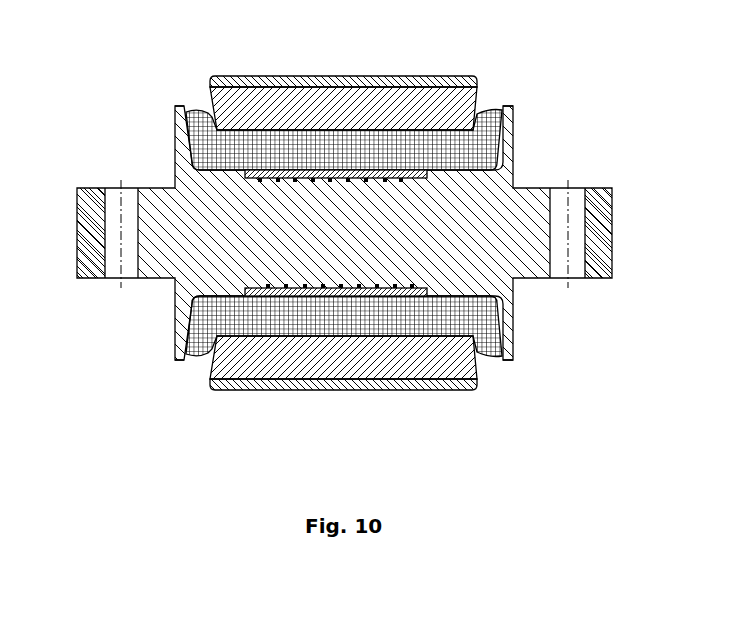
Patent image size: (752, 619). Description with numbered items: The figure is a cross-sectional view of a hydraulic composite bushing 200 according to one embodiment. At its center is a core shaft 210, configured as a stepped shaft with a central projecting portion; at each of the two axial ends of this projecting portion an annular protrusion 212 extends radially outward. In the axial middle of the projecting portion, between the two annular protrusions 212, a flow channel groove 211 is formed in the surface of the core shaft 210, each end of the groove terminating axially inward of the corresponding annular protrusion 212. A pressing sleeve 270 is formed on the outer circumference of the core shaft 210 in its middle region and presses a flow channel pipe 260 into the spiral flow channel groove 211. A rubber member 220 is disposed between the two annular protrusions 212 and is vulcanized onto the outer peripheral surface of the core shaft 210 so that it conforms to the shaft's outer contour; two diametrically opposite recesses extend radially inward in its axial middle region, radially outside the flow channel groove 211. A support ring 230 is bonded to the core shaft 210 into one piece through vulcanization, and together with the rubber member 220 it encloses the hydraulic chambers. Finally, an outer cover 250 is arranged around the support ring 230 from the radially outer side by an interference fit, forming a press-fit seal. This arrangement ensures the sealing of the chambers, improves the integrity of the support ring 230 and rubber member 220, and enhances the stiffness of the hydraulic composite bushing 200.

The hydraulic composite bushing 200 is at (101, 34).
The core shaft 210 is at (513, 303).
The flow channel groove 211 is at (336, 294).
The annular protrusion 212 is at (505, 137).
The rubber member 220 is at (332, 145).
The support ring 230 is at (290, 100).
The outer cover 250 is at (243, 81).
The flow channel pipe 260 is at (352, 290).
The pressing sleeve 270 is at (270, 294).